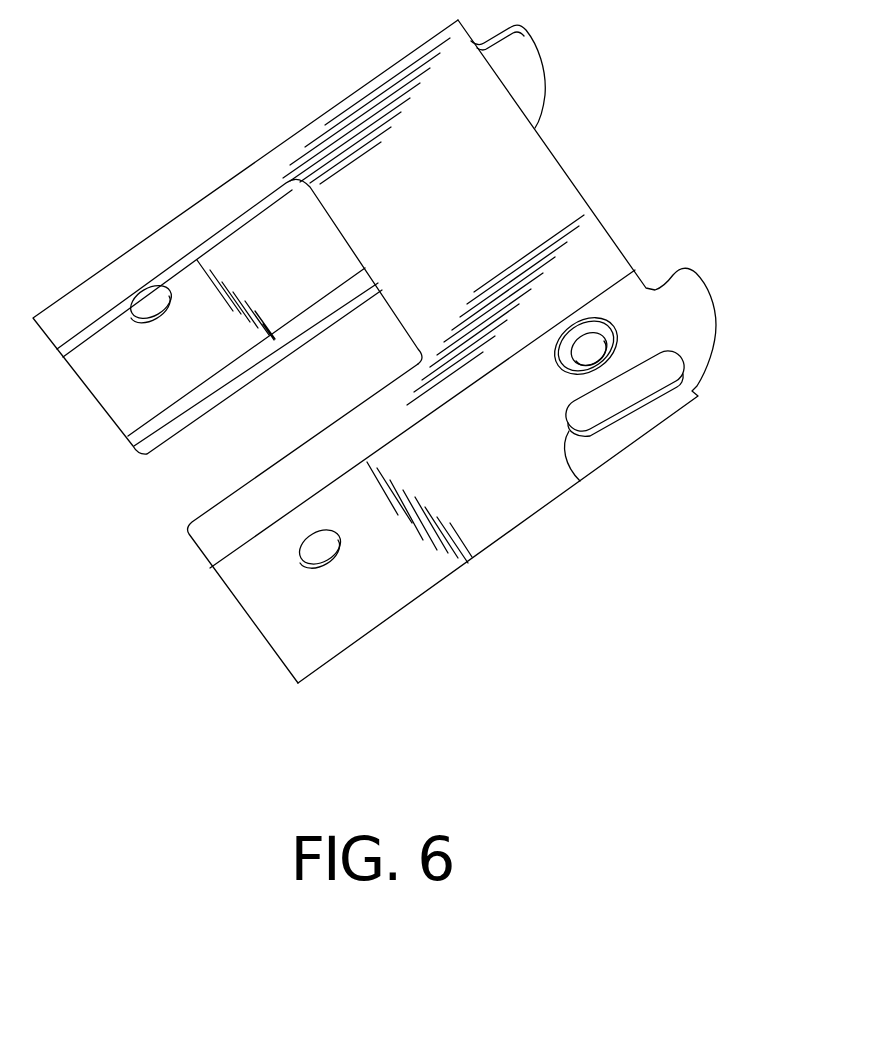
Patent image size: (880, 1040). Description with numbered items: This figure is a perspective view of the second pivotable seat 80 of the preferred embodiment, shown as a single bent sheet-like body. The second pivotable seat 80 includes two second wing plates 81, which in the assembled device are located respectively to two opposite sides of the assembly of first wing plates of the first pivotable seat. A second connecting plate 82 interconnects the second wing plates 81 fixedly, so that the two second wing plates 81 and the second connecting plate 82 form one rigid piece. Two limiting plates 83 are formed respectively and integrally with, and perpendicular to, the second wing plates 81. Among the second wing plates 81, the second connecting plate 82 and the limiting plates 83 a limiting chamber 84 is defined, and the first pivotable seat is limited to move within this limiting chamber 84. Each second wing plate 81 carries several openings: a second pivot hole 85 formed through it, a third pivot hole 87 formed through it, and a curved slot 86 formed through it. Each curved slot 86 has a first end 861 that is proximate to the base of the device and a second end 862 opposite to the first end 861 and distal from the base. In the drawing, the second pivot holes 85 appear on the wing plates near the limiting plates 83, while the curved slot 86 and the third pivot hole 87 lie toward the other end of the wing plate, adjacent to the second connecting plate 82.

The second pivotable seat 80 is at (453, 585).
The second wing plate 81 is at (230, 250).
The second connecting plate 82 is at (527, 170).
The limiting plate 83 is at (157, 433).
The limiting chamber 84 is at (250, 422).
The second pivot hole 85 is at (150, 303).
The curved slot 86 is at (633, 413).
The first end 861 is at (580, 481).
The second end 862 is at (715, 350).
The third pivot hole 87 is at (585, 345).